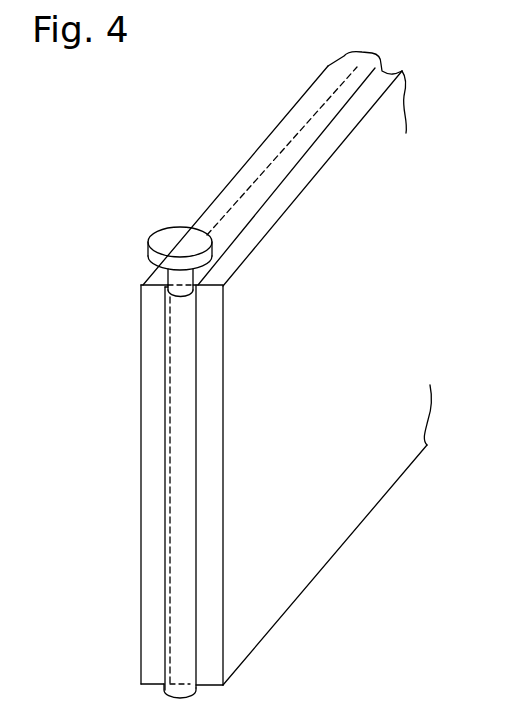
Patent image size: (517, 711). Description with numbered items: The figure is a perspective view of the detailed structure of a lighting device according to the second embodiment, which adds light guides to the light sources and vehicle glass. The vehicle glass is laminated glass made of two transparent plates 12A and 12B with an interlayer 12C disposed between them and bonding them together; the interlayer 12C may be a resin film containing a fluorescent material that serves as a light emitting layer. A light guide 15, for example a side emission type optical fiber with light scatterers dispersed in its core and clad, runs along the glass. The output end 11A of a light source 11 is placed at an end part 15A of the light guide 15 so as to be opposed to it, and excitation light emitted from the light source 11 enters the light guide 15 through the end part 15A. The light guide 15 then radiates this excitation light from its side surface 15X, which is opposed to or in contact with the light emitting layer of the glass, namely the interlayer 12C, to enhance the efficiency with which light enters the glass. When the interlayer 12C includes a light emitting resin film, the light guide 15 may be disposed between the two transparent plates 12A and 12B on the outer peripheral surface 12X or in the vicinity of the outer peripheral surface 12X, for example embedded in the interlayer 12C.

The light source 11 is at (148, 243).
The output end 11A is at (183, 300).
The transparent plate 12A is at (220, 202).
The transparent plate 12B is at (212, 425).
The interlayer 12C is at (278, 176).
The outer peripheral surface 12X is at (148, 470).
The light guide 15 is at (262, 193).
The end part 15A is at (156, 276).
The side surface 15X is at (196, 375).